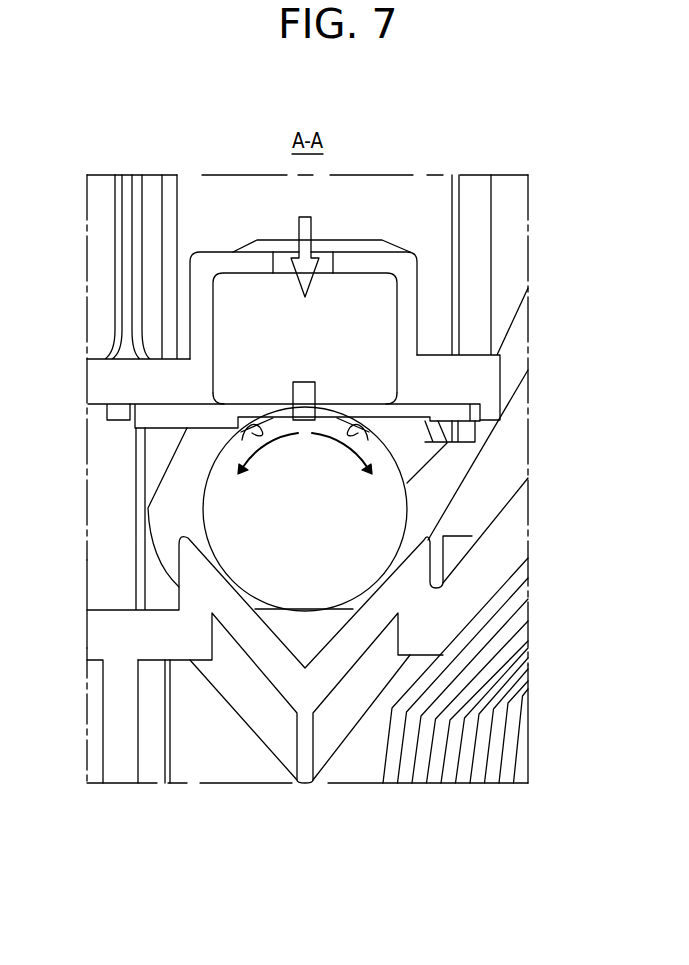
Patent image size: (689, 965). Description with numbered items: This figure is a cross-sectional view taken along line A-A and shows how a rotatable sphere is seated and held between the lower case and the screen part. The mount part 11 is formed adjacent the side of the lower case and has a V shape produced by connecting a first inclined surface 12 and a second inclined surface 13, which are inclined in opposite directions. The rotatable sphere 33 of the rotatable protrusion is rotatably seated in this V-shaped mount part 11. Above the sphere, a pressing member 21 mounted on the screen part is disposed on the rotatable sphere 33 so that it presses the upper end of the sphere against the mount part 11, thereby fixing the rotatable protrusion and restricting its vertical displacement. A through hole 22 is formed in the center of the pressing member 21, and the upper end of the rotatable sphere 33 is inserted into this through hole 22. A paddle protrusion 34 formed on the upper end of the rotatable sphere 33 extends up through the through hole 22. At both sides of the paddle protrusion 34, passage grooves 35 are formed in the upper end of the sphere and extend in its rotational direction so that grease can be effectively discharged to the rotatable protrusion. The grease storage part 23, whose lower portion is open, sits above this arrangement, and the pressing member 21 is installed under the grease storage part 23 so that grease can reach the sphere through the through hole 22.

The mount part 11 is at (245, 696).
The first inclined surface 12 is at (243, 627).
The second inclined surface 13 is at (347, 645).
The pressing member 21 is at (168, 415).
The through hole 22 is at (250, 413).
The grease storage part 23 is at (203, 297).
The rotatable sphere 33 is at (352, 507).
The paddle protrusion 34 is at (308, 395).
The passage groove 35 is at (245, 432).